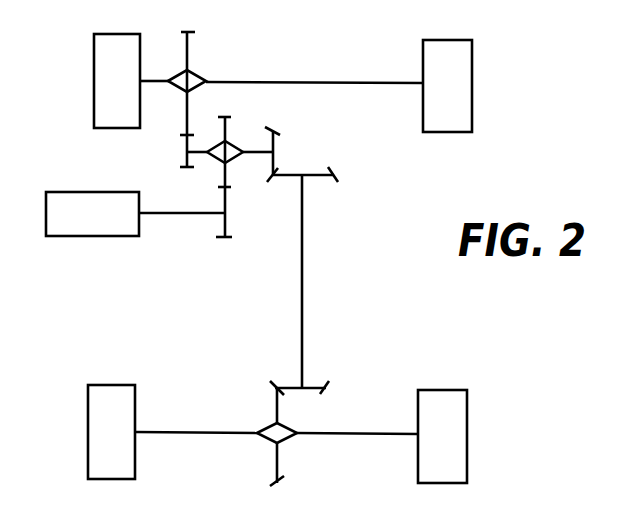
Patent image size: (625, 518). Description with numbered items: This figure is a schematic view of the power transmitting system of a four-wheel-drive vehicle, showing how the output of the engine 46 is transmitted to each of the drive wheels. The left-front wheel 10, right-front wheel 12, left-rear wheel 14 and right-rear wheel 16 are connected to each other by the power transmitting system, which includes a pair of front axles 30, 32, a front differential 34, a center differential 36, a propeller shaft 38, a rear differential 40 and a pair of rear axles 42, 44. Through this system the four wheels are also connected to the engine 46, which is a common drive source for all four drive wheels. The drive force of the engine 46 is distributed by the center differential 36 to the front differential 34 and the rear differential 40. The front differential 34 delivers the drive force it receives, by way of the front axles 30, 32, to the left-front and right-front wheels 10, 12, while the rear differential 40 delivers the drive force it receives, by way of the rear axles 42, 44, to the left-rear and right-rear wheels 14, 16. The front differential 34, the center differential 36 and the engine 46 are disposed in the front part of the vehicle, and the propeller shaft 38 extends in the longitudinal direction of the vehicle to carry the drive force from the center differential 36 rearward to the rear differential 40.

The left-front wheel 10 is at (112, 45).
The right-front wheel 12 is at (463, 64).
The left-rear wheel 14 is at (95, 430).
The right-rear wheel 16 is at (458, 437).
The front axle 30 is at (155, 77).
The front axle 32 is at (323, 82).
The front differential 34 is at (198, 79).
The center differential 36 is at (232, 147).
The propeller shaft 38 is at (303, 287).
The rear differential 40 is at (281, 437).
The rear axle 42 is at (182, 430).
The rear axle 44 is at (377, 432).
The engine 46 is at (87, 229).